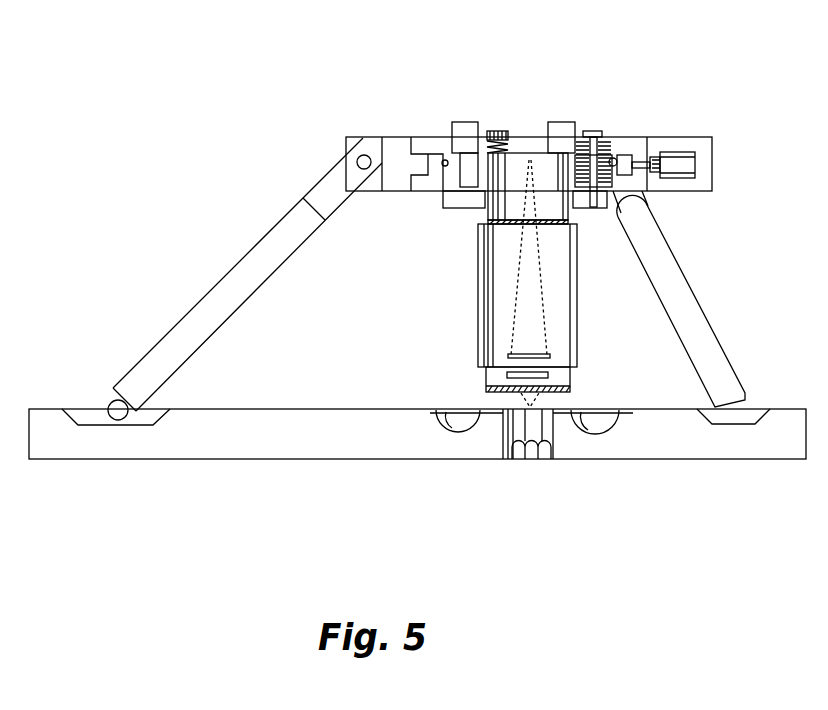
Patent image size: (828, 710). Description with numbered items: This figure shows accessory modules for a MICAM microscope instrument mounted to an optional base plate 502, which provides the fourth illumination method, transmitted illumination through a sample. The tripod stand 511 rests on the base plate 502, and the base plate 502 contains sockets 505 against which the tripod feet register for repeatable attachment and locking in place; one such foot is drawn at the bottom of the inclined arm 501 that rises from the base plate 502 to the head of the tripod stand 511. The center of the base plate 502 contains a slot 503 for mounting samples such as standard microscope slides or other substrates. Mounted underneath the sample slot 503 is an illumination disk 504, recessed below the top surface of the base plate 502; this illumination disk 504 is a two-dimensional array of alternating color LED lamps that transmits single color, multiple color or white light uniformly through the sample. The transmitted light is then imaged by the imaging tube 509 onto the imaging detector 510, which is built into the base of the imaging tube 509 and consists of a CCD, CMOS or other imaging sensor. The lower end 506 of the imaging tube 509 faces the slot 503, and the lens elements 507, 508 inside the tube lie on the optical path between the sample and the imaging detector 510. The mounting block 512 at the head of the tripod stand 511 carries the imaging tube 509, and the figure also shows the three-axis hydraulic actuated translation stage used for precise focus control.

The support arm 501 is at (257, 245).
The base plate 502 is at (228, 452).
The slot 503 is at (492, 413).
The illumination disk 504 is at (553, 445).
The socket 505 is at (110, 401).
The lens holder end 506 is at (485, 390).
The lens 507 is at (492, 377).
The lens 508 is at (503, 357).
The imaging tube 509 is at (480, 235).
The imaging detector 510 is at (529, 152).
The tripod stand 511 is at (630, 137).
The mounting block 512 is at (443, 160).